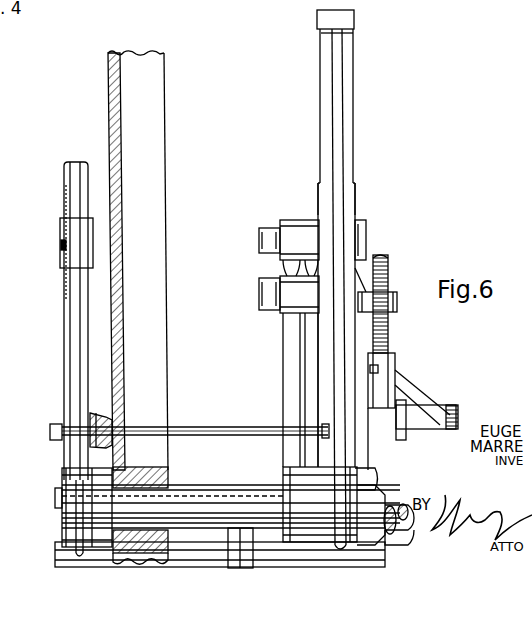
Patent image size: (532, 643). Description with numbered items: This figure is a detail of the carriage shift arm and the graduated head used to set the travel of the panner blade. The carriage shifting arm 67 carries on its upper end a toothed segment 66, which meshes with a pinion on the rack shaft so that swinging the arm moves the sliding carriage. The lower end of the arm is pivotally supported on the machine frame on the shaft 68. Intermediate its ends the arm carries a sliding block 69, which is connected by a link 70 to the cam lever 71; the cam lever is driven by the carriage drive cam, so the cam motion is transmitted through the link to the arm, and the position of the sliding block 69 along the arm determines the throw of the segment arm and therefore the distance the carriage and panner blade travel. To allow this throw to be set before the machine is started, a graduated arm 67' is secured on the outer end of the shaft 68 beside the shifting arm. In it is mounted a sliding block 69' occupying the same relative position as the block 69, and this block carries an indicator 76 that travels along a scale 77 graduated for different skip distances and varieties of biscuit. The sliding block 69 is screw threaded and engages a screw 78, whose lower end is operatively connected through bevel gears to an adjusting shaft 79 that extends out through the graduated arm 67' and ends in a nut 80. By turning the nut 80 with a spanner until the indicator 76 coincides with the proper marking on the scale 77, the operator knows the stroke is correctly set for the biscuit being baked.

The toothed segment 66 is at (349, 17).
The carriage shifting arm 67 is at (355, 289).
The graduated arm 67' is at (61, 359).
The shaft 68 is at (215, 487).
The sliding block 69 is at (323, 187).
The sliding block 69' is at (63, 242).
The link 70 is at (290, 226).
The cam lever 71 is at (283, 360).
The indicator 76 is at (63, 246).
The scale 77 is at (64, 197).
The screw 78 is at (388, 330).
The adjusting shaft 79 is at (198, 427).
The nut 80 is at (50, 430).